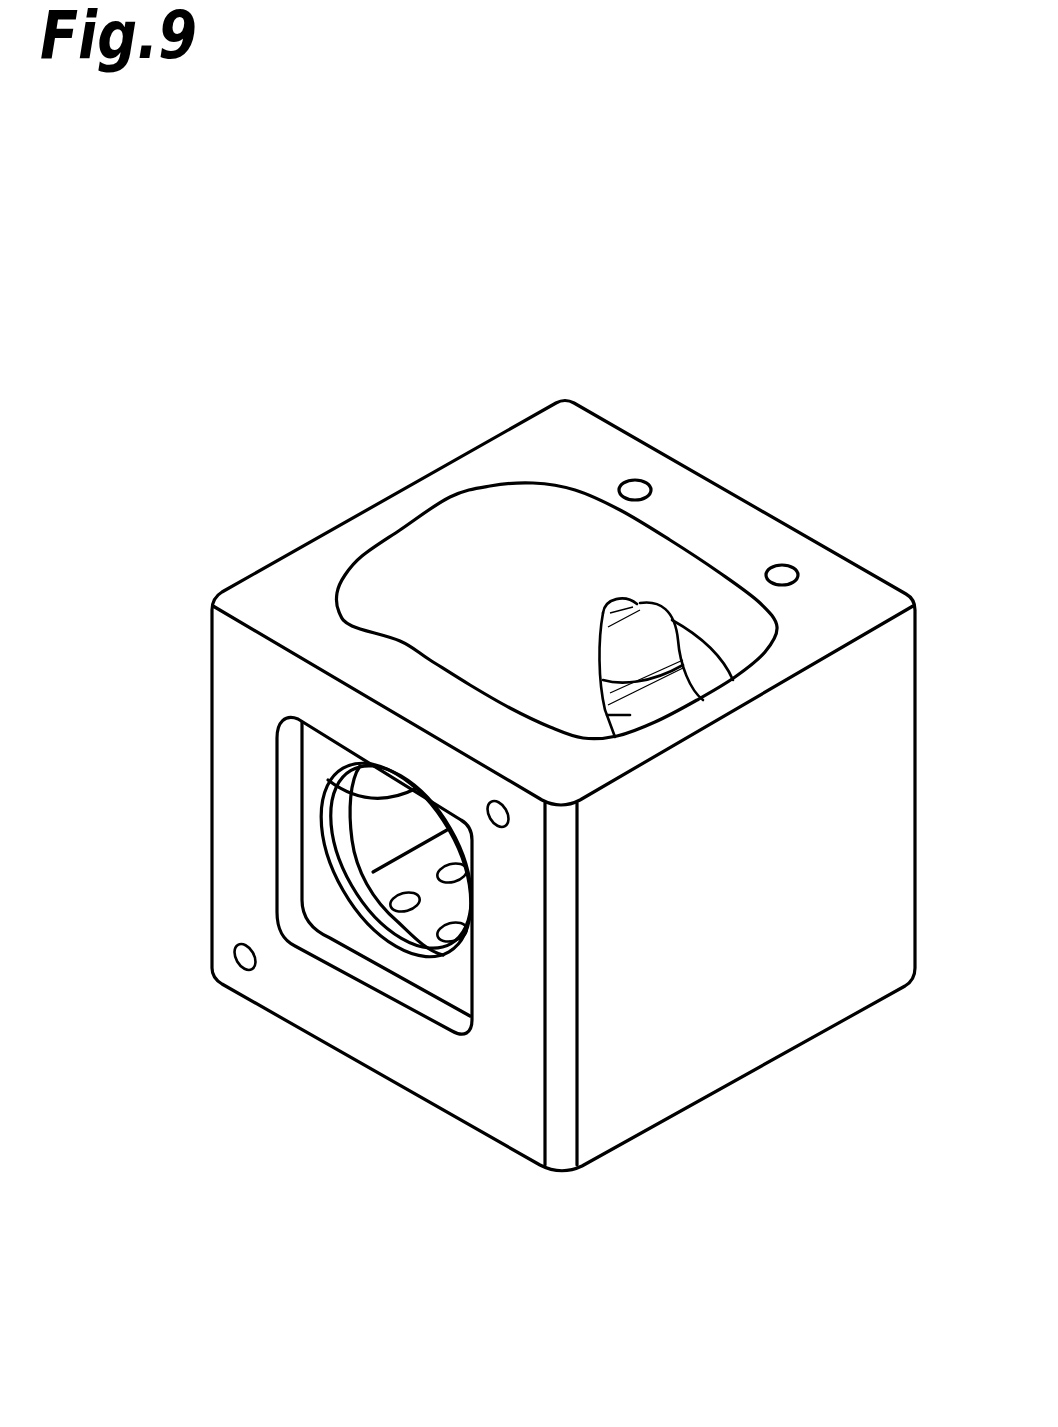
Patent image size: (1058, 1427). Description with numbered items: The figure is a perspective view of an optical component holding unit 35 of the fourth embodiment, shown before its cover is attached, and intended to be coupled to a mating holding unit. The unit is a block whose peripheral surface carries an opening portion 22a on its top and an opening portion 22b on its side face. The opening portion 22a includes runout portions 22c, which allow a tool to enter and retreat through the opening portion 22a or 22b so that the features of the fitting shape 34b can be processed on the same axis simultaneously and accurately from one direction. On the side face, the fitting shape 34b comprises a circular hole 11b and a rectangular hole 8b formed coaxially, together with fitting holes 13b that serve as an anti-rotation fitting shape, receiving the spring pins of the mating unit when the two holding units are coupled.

The optical component holding unit 35 is at (294, 285).
The opening portion 22a is at (615, 600).
The opening portion 22b is at (413, 787).
The runout portion 22c is at (607, 715).
The rectangular hole 8b is at (293, 837).
The circular hole 11b is at (363, 887).
The fitting hole 13b is at (238, 966).
The fitting shape 34b is at (325, 1020).